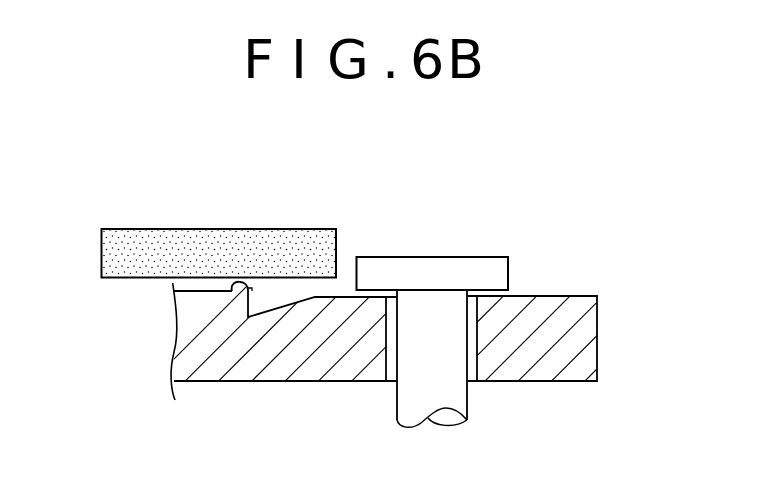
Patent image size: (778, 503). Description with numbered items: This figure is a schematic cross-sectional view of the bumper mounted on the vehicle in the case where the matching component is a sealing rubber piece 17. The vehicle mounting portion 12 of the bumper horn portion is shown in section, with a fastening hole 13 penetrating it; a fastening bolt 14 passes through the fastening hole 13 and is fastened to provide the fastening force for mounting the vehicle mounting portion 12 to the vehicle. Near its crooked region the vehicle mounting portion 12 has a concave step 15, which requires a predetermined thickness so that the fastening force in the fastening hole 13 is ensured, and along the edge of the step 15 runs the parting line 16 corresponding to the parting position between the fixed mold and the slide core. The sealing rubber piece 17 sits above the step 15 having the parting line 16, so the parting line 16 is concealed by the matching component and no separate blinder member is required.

The vehicle mounting portion 12 is at (558, 295).
The fastening hole 13 is at (473, 383).
The fastening bolt 14 is at (433, 257).
The concave step 15 is at (252, 292).
The parting line 16 is at (226, 291).
The sealing rubber piece 17 is at (270, 228).